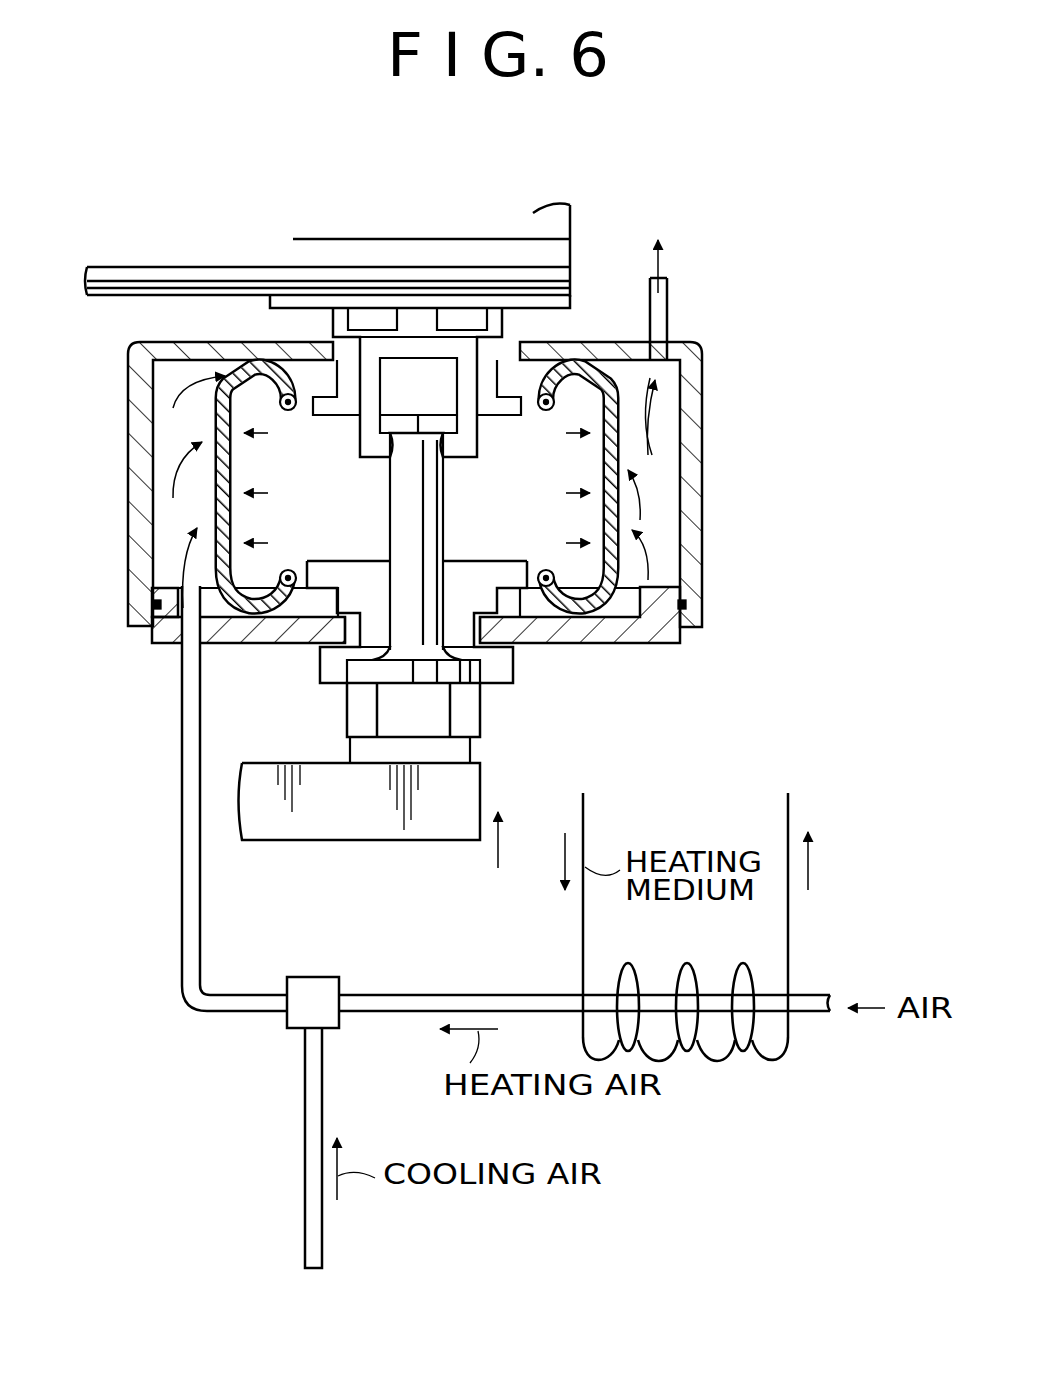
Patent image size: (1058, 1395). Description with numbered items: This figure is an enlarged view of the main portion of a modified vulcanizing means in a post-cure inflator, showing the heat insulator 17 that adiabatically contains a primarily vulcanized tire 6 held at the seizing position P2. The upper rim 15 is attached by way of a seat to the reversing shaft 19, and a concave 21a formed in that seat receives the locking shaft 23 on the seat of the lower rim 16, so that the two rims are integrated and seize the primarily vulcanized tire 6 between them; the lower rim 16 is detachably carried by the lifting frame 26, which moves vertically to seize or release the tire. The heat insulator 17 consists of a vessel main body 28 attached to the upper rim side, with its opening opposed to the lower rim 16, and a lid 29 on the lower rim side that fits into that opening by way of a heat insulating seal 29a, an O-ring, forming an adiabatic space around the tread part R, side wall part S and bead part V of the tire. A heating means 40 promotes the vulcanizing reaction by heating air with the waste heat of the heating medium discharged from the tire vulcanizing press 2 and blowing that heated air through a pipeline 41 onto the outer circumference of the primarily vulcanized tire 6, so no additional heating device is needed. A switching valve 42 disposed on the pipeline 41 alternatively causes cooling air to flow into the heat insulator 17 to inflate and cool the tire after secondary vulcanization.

The reversing shaft 19 is at (192, 267).
The heat insulator 17 is at (712, 402).
The vessel main body 28 is at (693, 480).
The lid 29 is at (622, 630).
The heat insulating seal 29a is at (686, 607).
The lower rim 16 is at (515, 602).
The upper rim 15 is at (525, 396).
The concave 21a is at (385, 396).
The locking shaft 23 is at (400, 497).
The lifting frame 26 is at (285, 838).
The heating means 40 is at (181, 834).
The pipeline 41 is at (502, 996).
The switching valve 42 is at (320, 983).
The tire vulcanizing press 2 is at (687, 746).
The primarily vulcanized tire 6 is at (210, 511).
The tread part R is at (213, 432).
The side wall part S is at (249, 620).
The bead part V is at (288, 622).
The seizing position P2 is at (520, 515).